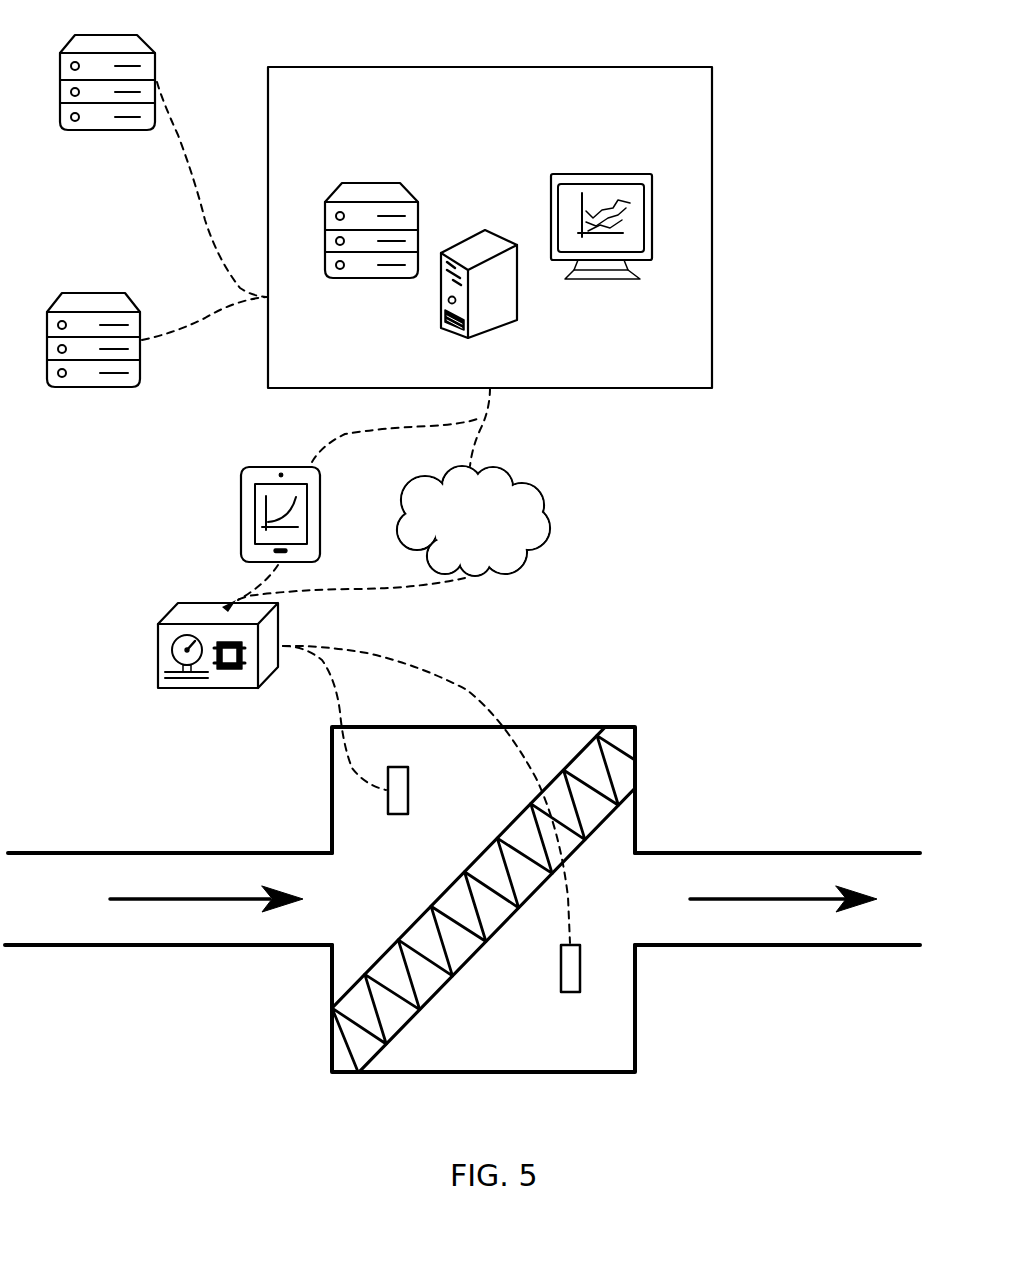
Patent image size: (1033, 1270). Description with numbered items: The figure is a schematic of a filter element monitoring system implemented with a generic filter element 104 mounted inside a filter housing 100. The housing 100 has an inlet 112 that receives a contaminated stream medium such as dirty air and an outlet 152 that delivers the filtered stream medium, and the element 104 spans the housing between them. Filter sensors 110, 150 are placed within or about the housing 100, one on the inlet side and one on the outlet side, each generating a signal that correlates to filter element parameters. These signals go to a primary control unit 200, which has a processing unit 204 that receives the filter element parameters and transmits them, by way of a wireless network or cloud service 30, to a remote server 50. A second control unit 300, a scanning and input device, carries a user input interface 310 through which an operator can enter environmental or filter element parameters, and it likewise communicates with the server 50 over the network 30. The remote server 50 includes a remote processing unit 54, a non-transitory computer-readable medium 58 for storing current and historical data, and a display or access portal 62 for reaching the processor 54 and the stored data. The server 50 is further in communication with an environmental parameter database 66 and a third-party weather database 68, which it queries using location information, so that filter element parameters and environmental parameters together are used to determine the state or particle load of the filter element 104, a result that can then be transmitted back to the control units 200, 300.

The wireless network 30 is at (553, 525).
The remote server 50 is at (712, 223).
The remote processing unit 54 is at (479, 230).
The non-transitory computer-readable medium 58 is at (383, 183).
The display or access portal 62 is at (605, 175).
The environmental parameter database 66 is at (91, 292).
The third-party weather database 68 is at (155, 58).
The filter housing 100 is at (528, 927).
The filter element 104 is at (355, 1038).
The filter sensor 110 is at (388, 808).
The inlet 112 is at (77, 928).
The filter sensor 150 is at (570, 992).
The outlet 152 is at (818, 920).
The primary control unit 200 is at (201, 665).
The processing unit 204 is at (232, 669).
The control unit 300 is at (252, 478).
The user input interface 310 is at (262, 526).